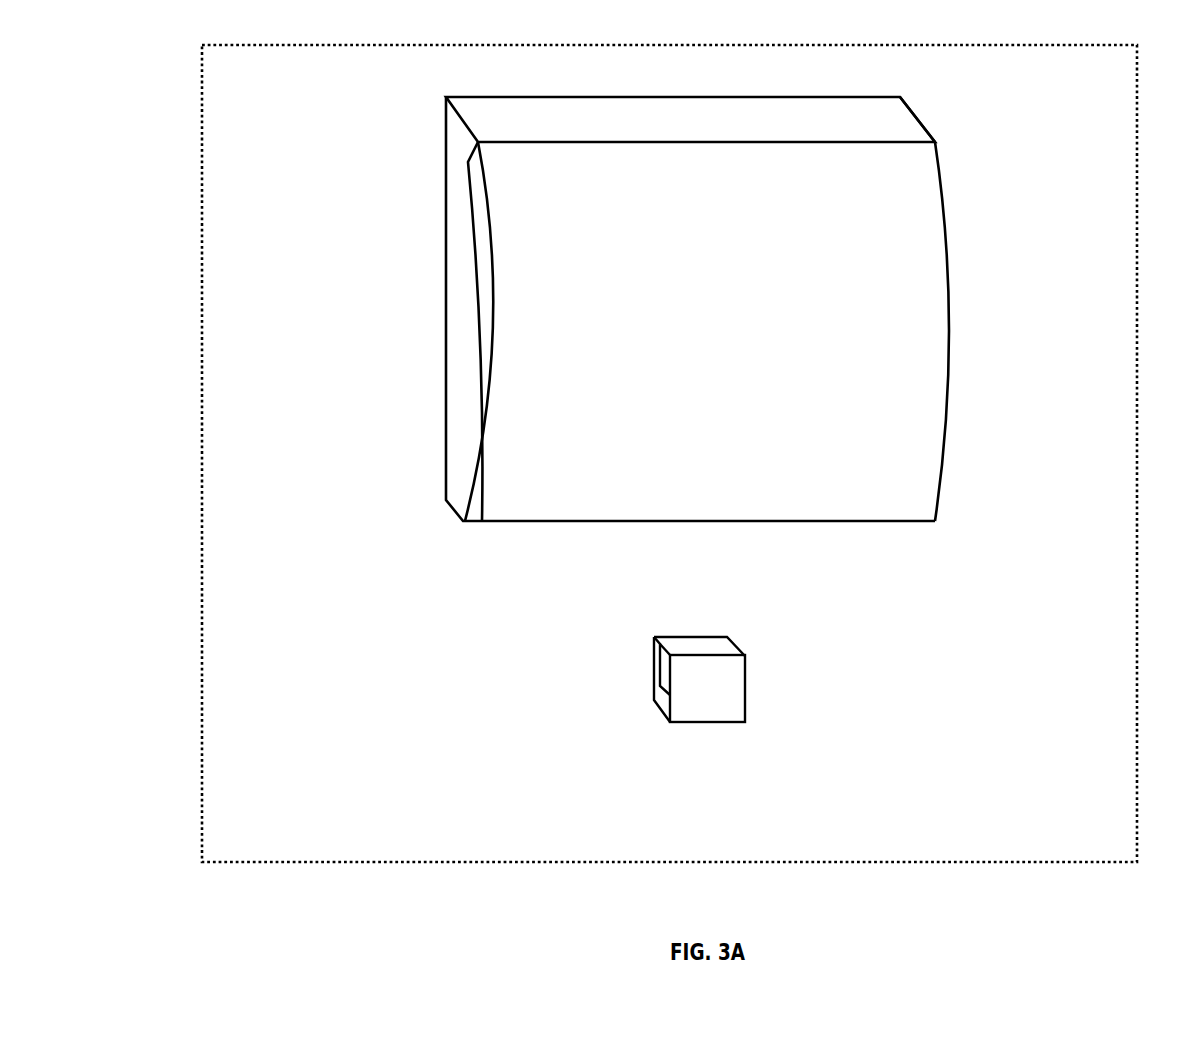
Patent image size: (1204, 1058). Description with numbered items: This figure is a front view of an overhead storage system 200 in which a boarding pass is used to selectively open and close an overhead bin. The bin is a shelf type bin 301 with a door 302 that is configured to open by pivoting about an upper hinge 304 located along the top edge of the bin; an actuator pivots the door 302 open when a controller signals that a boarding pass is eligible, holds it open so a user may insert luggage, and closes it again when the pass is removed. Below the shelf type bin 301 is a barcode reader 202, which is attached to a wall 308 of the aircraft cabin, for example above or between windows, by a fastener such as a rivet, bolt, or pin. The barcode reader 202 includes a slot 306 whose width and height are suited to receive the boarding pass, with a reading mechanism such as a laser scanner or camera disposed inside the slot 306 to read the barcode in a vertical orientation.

The system 200 is at (171, 164).
The barcode reader 202 is at (683, 664).
The shelf type bin 301 is at (644, 307).
The door 302 is at (915, 480).
The upper hinge 304 is at (940, 141).
The slot 306 is at (742, 647).
The wall 308 is at (1142, 564).